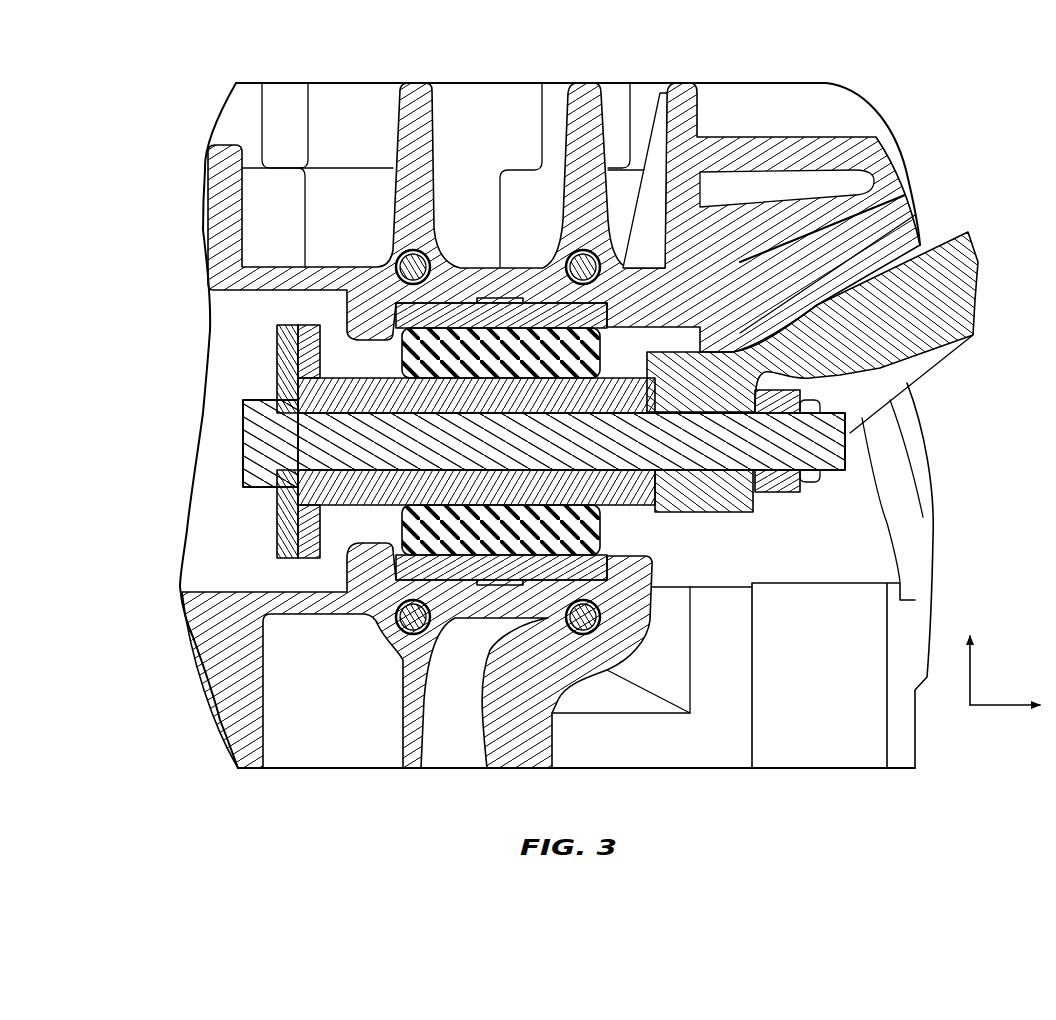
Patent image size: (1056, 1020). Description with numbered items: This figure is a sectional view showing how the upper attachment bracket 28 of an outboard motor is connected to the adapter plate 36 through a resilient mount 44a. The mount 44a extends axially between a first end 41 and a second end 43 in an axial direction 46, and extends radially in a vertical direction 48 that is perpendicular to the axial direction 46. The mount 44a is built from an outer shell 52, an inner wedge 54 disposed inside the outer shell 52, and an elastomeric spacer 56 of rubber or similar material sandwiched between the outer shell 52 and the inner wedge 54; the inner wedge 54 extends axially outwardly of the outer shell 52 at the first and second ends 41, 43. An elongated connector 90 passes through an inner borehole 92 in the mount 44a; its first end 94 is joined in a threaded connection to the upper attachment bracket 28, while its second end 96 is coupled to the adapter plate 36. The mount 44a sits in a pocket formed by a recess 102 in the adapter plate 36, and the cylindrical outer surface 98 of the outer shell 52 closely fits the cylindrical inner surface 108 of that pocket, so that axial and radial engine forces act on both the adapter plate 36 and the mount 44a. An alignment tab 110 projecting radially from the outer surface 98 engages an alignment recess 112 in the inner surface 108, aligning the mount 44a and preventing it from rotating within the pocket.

The upper attachment bracket 28 is at (953, 295).
The adapter plate 36 is at (232, 250).
The first end 41 is at (742, 332).
The second end 43 is at (362, 398).
The first mount 44a is at (228, 537).
The axial direction 46 is at (1012, 705).
The vertical direction 48 is at (972, 665).
The outer shell 52 is at (377, 617).
The inner wedge 54 is at (277, 343).
The elastomeric spacer 56 is at (640, 537).
The elongated connector 90 is at (280, 533).
The inner borehole 92 is at (722, 508).
The first end 94 is at (835, 452).
The second end 96 is at (337, 455).
The cylindrical outer surface 98 is at (410, 673).
The recess 102 is at (378, 540).
The cylindrical inner surface 108 is at (650, 590).
The alignment tab 110 is at (480, 296).
The alignment recess 112 is at (513, 298).